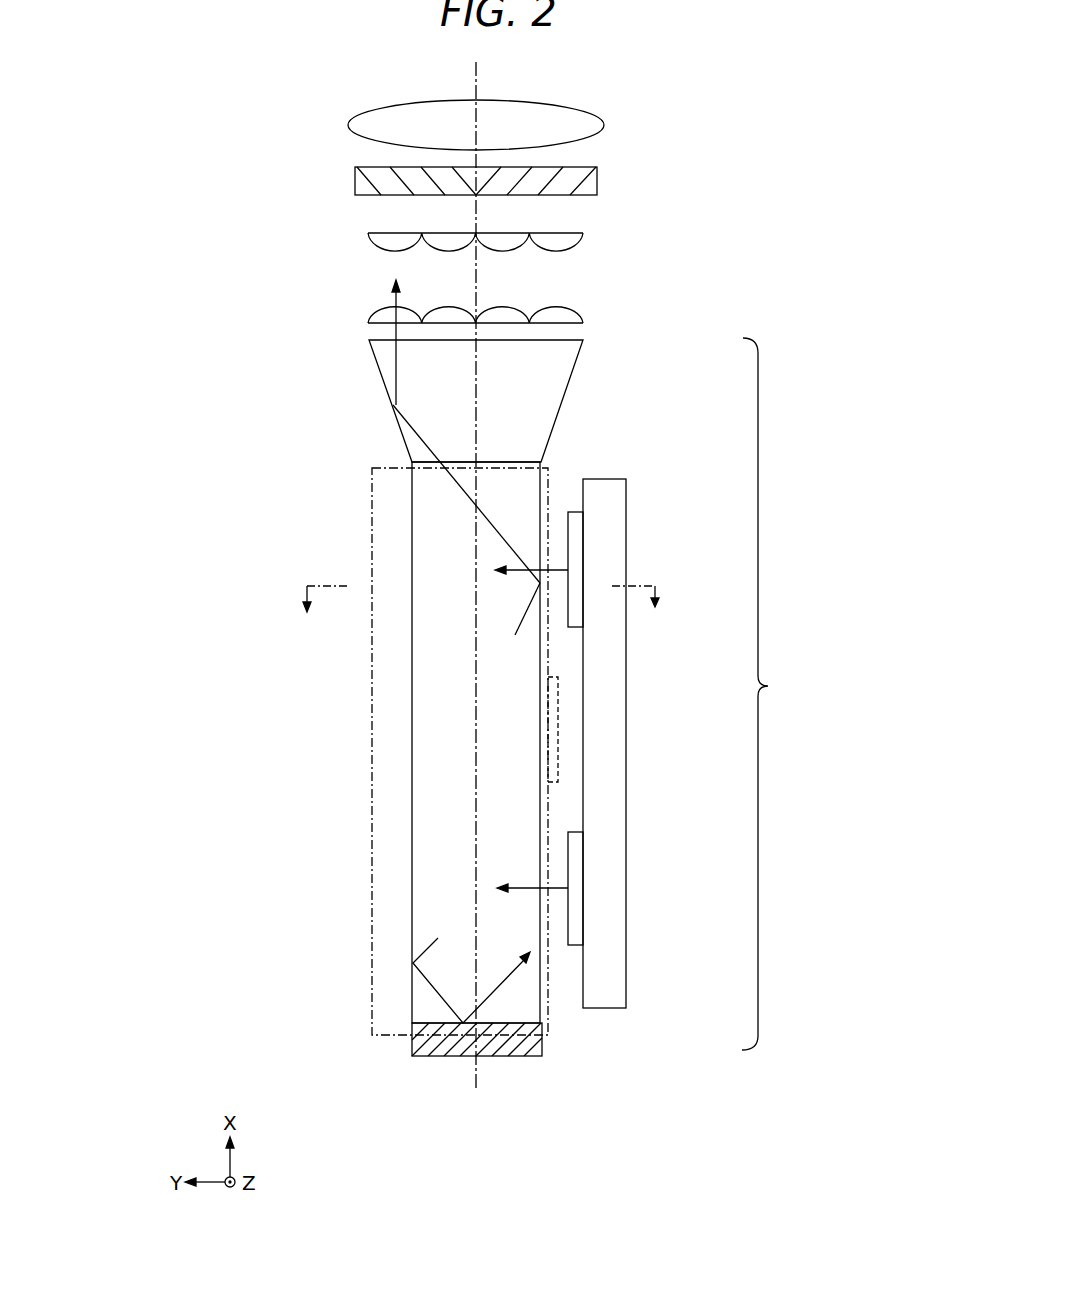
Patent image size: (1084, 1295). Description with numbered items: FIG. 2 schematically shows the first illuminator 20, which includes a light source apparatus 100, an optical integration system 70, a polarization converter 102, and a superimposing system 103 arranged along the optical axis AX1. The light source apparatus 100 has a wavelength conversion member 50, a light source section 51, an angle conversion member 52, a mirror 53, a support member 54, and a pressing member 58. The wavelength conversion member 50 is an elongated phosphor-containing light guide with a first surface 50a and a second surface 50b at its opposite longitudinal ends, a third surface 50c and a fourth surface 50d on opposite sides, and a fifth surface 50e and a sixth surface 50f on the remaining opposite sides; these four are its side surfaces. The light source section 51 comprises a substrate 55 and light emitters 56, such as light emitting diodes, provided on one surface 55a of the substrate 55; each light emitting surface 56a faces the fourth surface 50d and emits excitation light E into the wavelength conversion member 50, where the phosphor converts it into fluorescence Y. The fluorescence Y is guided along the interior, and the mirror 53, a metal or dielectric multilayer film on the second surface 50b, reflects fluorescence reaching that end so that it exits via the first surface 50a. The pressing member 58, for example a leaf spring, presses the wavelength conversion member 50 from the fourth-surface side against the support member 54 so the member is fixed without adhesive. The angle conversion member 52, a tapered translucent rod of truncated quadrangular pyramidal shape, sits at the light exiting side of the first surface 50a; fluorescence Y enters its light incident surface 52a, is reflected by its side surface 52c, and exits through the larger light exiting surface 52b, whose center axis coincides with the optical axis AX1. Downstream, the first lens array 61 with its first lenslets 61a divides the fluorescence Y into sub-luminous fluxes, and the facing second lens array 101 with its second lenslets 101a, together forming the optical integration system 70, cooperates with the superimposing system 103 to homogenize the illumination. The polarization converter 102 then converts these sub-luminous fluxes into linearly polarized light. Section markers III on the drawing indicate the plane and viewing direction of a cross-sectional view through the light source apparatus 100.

The first illuminator 20 is at (740, 127).
The light source apparatus 100 is at (781, 694).
The second lens array 101 is at (592, 248).
The second lenslets 101a is at (390, 238).
The polarization converter 102 is at (590, 183).
The superimposing system 103 is at (587, 120).
The first lens array 61 is at (590, 300).
The first lenslets 61a is at (387, 310).
The optical integration system 70 is at (507, 273).
The wavelength conversion member 50 is at (540, 862).
The first surface 50a is at (427, 460).
The second surface 50b is at (520, 1028).
The third surface 50c is at (412, 820).
The fourth surface 50d is at (540, 730).
The fifth surface 50e is at (425, 673).
The sixth surface 50f is at (422, 727).
The light source section 51 is at (636, 697).
The angle conversion member 52 is at (560, 372).
The light incident surface 52a is at (447, 466).
The light exiting surface 52b is at (380, 338).
The side surface 52c is at (380, 380).
The mirror 53 is at (412, 1042).
The support member 54 is at (388, 543).
The substrate 55 is at (607, 718).
The one surface of substrate 55a is at (572, 755).
The light emitters 56 is at (577, 610).
The light emitting surface 56a is at (562, 622).
The pressing member 58 is at (553, 772).
The optical axis AX1 is at (477, 1077).
The excitation light E is at (557, 570).
The fluorescence Y is at (540, 530).
The section line III is at (477, 599).